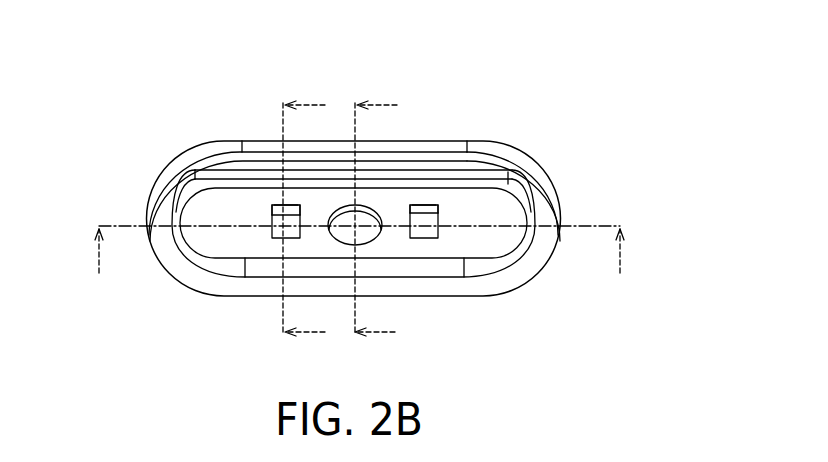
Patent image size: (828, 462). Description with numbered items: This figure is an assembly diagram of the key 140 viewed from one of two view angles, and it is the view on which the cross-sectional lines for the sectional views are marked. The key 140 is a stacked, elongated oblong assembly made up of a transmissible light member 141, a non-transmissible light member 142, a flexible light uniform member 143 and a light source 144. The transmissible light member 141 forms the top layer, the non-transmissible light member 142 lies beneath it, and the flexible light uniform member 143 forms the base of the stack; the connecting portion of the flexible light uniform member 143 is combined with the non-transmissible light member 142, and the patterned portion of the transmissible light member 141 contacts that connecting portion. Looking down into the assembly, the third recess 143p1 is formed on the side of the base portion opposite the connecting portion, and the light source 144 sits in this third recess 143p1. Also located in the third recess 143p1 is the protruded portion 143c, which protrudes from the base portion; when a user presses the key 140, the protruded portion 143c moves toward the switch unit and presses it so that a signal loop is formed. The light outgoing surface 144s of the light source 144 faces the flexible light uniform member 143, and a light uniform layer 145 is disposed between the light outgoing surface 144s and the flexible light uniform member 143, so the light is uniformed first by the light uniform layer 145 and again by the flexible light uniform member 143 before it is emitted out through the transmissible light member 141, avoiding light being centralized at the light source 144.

The key 140 is at (704, 61).
The transmissible light member 141 is at (190, 147).
The non-transmissible light member 142 is at (185, 164).
The flexible light uniform member 143 is at (157, 277).
The third recess 143p1 is at (213, 246).
The protruded portion 143c is at (363, 247).
The light source 144 is at (282, 240).
The light outgoing surface 144s is at (283, 203).
The light uniform layer 145 is at (279, 203).